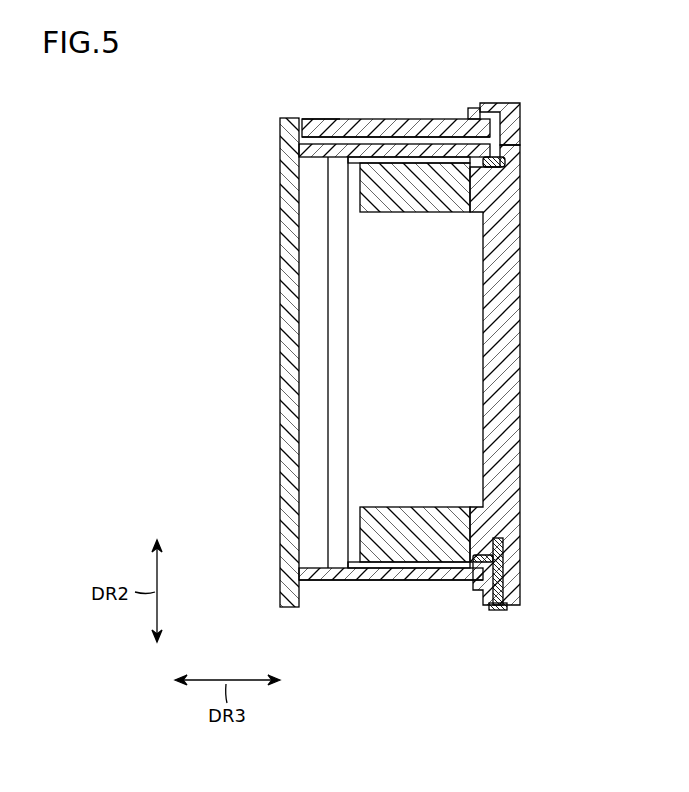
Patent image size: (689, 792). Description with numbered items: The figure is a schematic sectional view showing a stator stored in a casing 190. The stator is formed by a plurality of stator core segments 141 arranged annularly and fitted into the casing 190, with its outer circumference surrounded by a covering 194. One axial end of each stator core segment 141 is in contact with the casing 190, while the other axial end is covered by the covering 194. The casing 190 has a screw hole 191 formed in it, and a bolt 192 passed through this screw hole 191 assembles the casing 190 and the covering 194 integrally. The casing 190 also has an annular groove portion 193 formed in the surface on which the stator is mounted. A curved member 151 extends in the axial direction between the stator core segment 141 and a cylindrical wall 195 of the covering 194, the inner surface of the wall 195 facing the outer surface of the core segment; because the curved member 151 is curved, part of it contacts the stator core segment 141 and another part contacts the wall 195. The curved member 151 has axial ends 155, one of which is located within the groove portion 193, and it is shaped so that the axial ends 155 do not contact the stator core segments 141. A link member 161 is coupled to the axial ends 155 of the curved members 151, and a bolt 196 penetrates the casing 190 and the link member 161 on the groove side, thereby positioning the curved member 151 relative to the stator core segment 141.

The stator core segment 141 is at (453, 190).
The curved member 151 is at (408, 137).
The axial end 155 is at (333, 119).
The link member 161 is at (333, 372).
The casing 190 is at (508, 343).
The screw hole 191 is at (512, 129).
The bolt 192 is at (448, 127).
The groove portion 193 is at (503, 162).
The covering 194 is at (286, 320).
The wall 195 is at (368, 144).
The bolt 196 is at (501, 587).